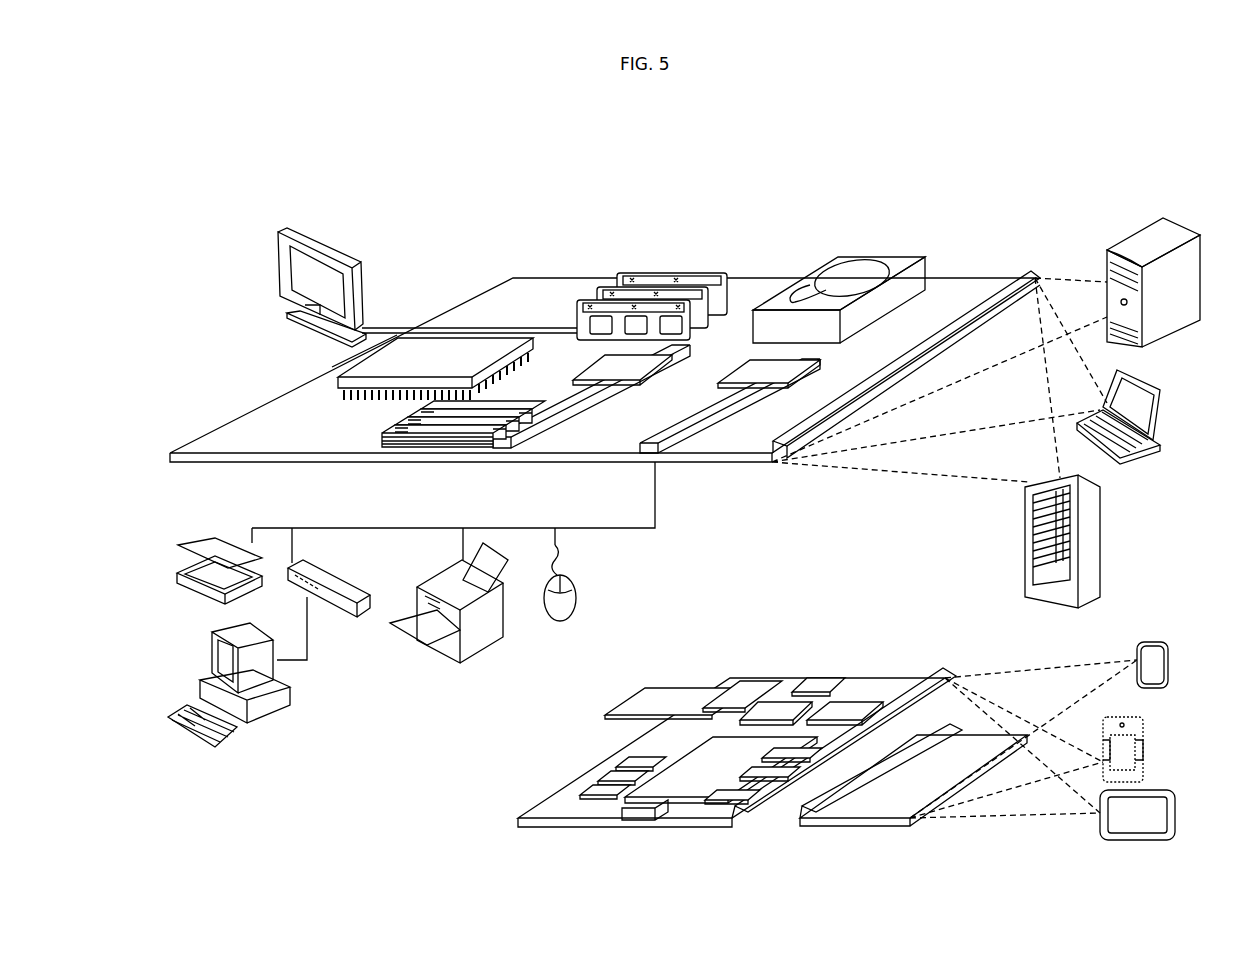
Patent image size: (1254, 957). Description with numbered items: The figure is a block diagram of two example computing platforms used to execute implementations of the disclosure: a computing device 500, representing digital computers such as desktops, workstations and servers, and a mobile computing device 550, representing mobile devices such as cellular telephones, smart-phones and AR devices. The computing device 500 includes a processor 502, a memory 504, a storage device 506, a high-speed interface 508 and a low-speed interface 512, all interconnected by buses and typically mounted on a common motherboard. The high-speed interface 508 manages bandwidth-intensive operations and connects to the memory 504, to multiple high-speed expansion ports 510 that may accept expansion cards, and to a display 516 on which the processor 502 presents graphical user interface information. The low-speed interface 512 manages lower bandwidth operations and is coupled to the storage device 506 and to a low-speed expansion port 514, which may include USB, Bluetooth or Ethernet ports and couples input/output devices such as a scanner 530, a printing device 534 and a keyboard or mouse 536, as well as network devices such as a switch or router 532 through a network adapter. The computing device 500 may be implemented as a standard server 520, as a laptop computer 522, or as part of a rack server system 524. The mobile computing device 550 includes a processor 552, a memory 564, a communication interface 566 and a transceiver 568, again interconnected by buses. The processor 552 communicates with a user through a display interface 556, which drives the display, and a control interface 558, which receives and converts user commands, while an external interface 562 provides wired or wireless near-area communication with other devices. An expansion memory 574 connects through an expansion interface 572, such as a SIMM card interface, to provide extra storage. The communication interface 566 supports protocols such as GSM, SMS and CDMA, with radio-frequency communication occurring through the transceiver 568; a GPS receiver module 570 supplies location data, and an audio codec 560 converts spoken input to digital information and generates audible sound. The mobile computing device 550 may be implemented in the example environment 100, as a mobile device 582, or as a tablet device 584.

The computing device 500 is at (250, 180).
The processor 502 is at (340, 385).
The memory 504 is at (640, 272).
The storage device 506 is at (887, 258).
The high-speed interface 508 is at (608, 367).
The high-speed expansion ports 510 is at (385, 432).
The low-speed interface 512 is at (752, 372).
The low-speed expansion port 514 is at (660, 458).
The display 516 is at (280, 235).
The standard server 520 is at (1105, 258).
The laptop computer 522 is at (1143, 378).
The rack server system 524 is at (1025, 545).
The scanner 530 is at (208, 540).
The switch or router 532 is at (340, 612).
The printing device 534 is at (487, 647).
The mouse 536 is at (575, 605).
The mobile computing device 550 is at (497, 853).
The processor 552 is at (695, 772).
The display interface 556 is at (748, 790).
The control interface 558 is at (770, 790).
The audio codec 560 is at (775, 757).
The external interface 562 is at (635, 818).
The memory 564 is at (600, 786).
The communication interface 566 is at (786, 710).
The transceiver 568 is at (855, 705).
The GPS receiver module 570 is at (816, 678).
The expansion interface 572 is at (717, 685).
The expansion memory 574 is at (650, 688).
The mobile device 582 is at (1150, 642).
The example environment 100 is at (1145, 730).
The tablet device 584 is at (1175, 815).